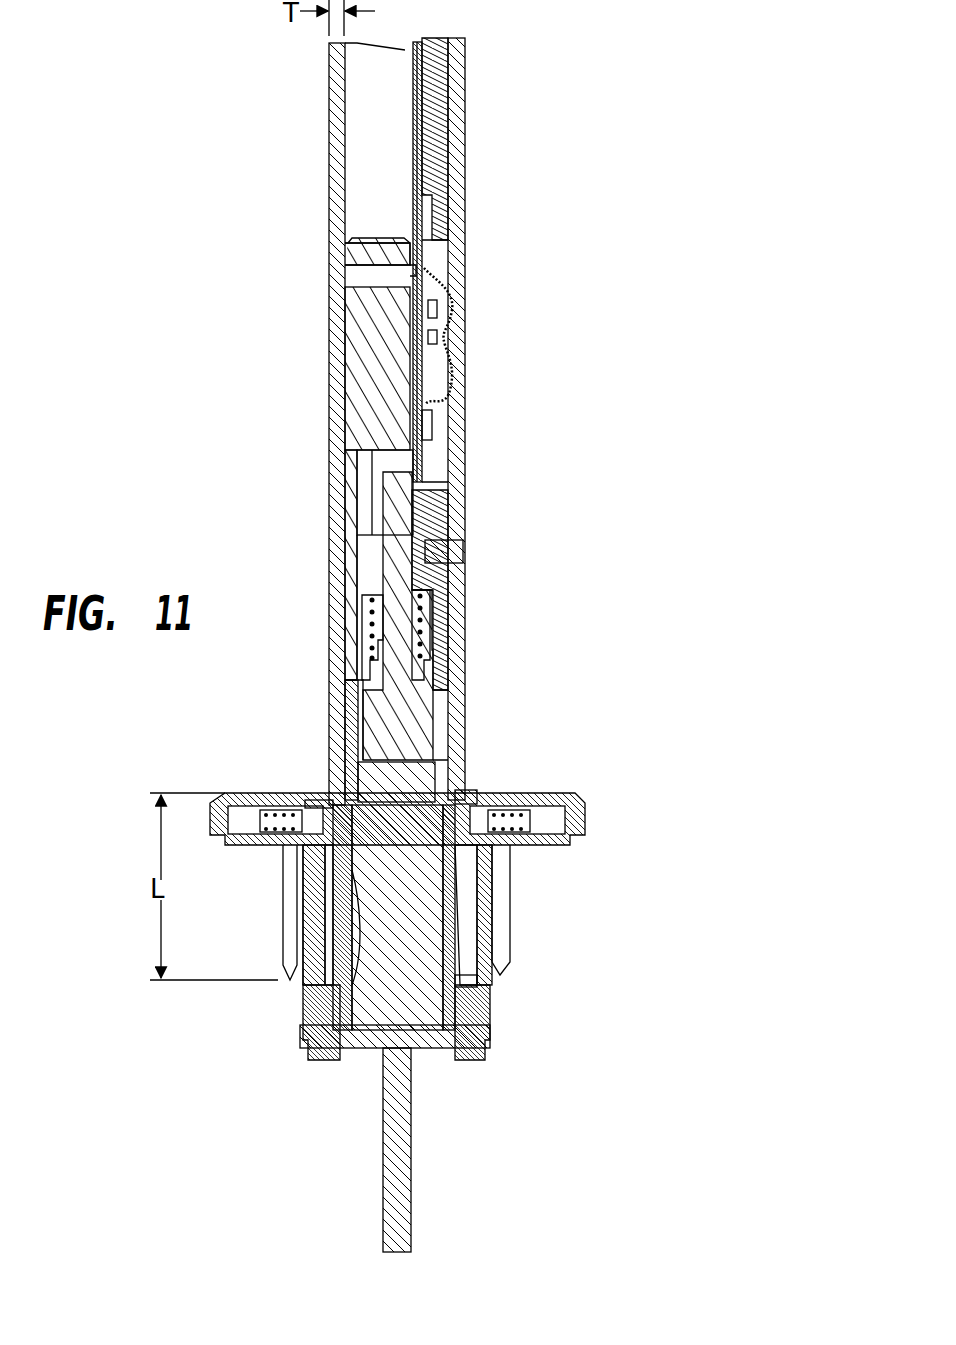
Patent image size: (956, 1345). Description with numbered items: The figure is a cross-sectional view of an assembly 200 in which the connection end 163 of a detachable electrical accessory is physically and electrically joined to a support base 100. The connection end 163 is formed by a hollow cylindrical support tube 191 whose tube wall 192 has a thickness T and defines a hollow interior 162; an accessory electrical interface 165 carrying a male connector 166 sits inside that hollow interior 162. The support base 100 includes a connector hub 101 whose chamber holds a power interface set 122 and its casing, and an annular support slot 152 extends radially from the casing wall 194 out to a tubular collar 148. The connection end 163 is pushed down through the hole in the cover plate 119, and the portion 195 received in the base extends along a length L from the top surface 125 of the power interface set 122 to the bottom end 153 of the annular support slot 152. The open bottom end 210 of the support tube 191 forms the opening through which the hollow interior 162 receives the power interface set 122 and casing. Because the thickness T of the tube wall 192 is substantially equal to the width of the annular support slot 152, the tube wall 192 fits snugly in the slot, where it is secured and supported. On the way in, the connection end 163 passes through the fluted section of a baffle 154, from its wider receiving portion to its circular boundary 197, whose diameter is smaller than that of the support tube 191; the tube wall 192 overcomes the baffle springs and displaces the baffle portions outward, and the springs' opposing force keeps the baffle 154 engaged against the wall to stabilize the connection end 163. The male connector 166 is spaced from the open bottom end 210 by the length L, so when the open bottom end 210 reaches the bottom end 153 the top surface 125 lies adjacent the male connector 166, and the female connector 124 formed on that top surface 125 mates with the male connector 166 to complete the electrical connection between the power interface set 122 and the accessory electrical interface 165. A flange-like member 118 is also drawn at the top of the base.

The support base 100 is at (606, 785).
The connector hub 101 is at (496, 870).
The flange 118 is at (543, 790).
The cover plate 119 is at (470, 792).
The power interface set 122 is at (420, 998).
The female connector 124 is at (354, 880).
The top surface 125 is at (430, 800).
The tubular collar 148 is at (480, 920).
The annular support slot 152 is at (470, 903).
The bottom end 153 is at (472, 983).
The baffle 154 is at (307, 805).
The hollow interior 162 is at (370, 165).
The connection end 163 is at (485, 716).
The accessory electrical interface 165 is at (383, 693).
The male connector 166 is at (357, 733).
The support tube 191 is at (465, 162).
The tube wall 192 is at (455, 203).
The casing wall 194 is at (450, 945).
The portion 195 is at (333, 925).
The circular boundary 197 is at (312, 845).
The assembly 200 is at (612, 438).
The open bottom end 210 is at (330, 1005).